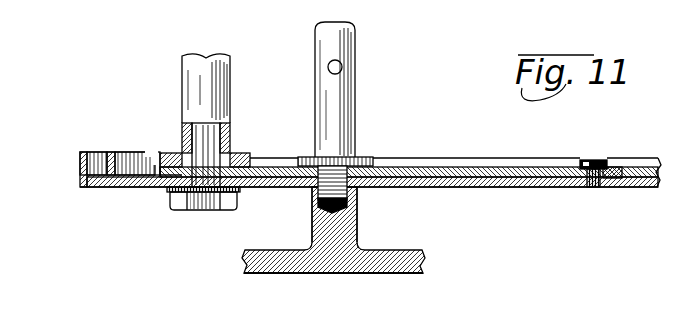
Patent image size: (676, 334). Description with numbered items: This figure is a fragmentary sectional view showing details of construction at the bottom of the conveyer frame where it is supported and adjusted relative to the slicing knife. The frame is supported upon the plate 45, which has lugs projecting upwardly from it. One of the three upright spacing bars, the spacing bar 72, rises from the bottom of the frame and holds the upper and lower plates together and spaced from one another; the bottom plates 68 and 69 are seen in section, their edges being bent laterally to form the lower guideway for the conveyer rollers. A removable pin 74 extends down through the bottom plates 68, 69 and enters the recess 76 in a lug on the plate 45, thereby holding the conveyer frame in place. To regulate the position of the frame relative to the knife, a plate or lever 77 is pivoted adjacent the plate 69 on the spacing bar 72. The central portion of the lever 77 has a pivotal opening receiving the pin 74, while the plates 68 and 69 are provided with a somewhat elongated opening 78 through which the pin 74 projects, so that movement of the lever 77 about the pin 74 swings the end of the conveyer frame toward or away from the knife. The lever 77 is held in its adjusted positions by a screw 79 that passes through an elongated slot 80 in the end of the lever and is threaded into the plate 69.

The plate 45 is at (404, 268).
The bottom plate 68 is at (450, 185).
The bottom plate 69 is at (545, 178).
The spacing bar 72 is at (198, 97).
The removable pin 74 is at (340, 98).
The recess 76 is at (320, 206).
The lever 77 is at (433, 167).
The elongated opening 78 is at (371, 160).
The screw 79 is at (600, 163).
The elongated slot 80 is at (620, 170).